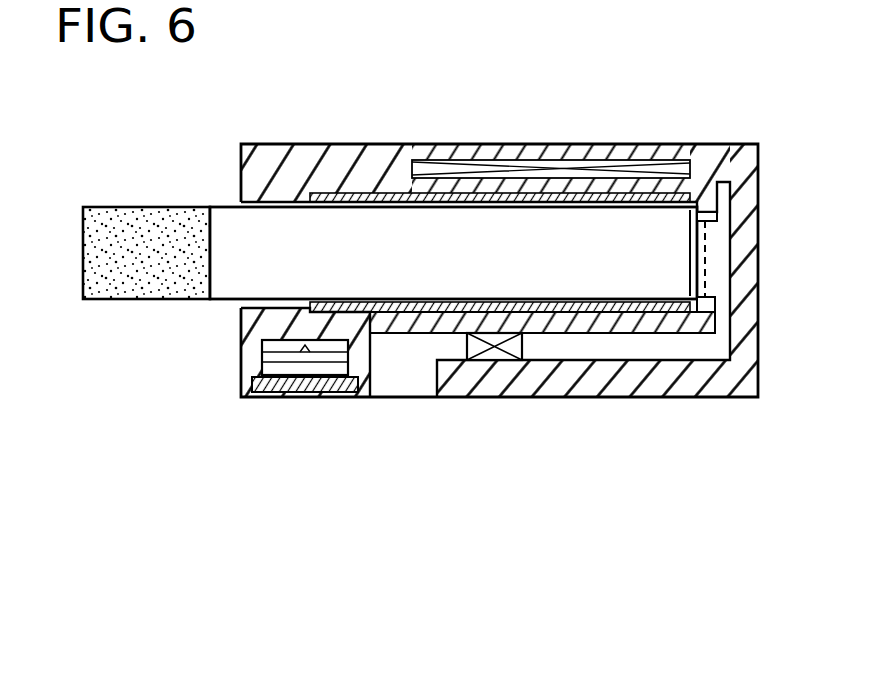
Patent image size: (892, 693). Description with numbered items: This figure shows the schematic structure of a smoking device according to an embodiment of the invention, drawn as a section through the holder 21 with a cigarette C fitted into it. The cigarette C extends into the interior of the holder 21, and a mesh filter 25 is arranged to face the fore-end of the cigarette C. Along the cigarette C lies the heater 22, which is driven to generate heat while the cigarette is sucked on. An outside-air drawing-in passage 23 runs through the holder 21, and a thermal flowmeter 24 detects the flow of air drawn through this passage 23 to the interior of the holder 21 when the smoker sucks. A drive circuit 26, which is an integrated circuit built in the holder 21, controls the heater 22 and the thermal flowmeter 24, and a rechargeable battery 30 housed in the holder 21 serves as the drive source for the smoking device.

The cigarette C is at (228, 230).
The holder 21 is at (548, 143).
The heater 22 is at (395, 200).
The outside-air drawing-in passage 23 is at (650, 362).
The thermal flowmeter 24 is at (498, 358).
The mesh filter 25 is at (706, 258).
The drive circuit 26 is at (641, 161).
The rechargeable battery 30 is at (302, 370).